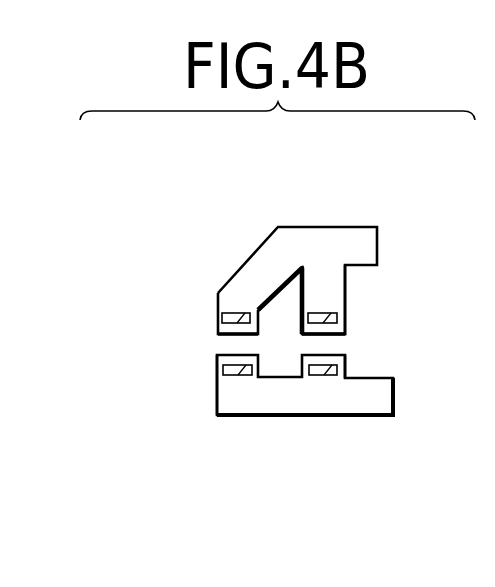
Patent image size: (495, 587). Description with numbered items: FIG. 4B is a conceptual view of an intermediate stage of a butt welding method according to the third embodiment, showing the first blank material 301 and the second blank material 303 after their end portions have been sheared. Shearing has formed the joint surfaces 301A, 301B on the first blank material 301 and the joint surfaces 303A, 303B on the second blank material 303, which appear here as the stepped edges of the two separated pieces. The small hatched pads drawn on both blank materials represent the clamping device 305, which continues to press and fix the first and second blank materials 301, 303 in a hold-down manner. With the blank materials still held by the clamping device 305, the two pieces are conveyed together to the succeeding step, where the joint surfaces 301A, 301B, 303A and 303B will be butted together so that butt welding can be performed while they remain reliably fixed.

The first blank material 301 is at (282, 275).
The joint surface 301A is at (218, 327).
The joint surface 301B is at (347, 325).
The second blank material 303 is at (282, 417).
The joint surface 303A is at (218, 362).
The joint surface 303B is at (346, 360).
The clamping device 305 is at (320, 313).